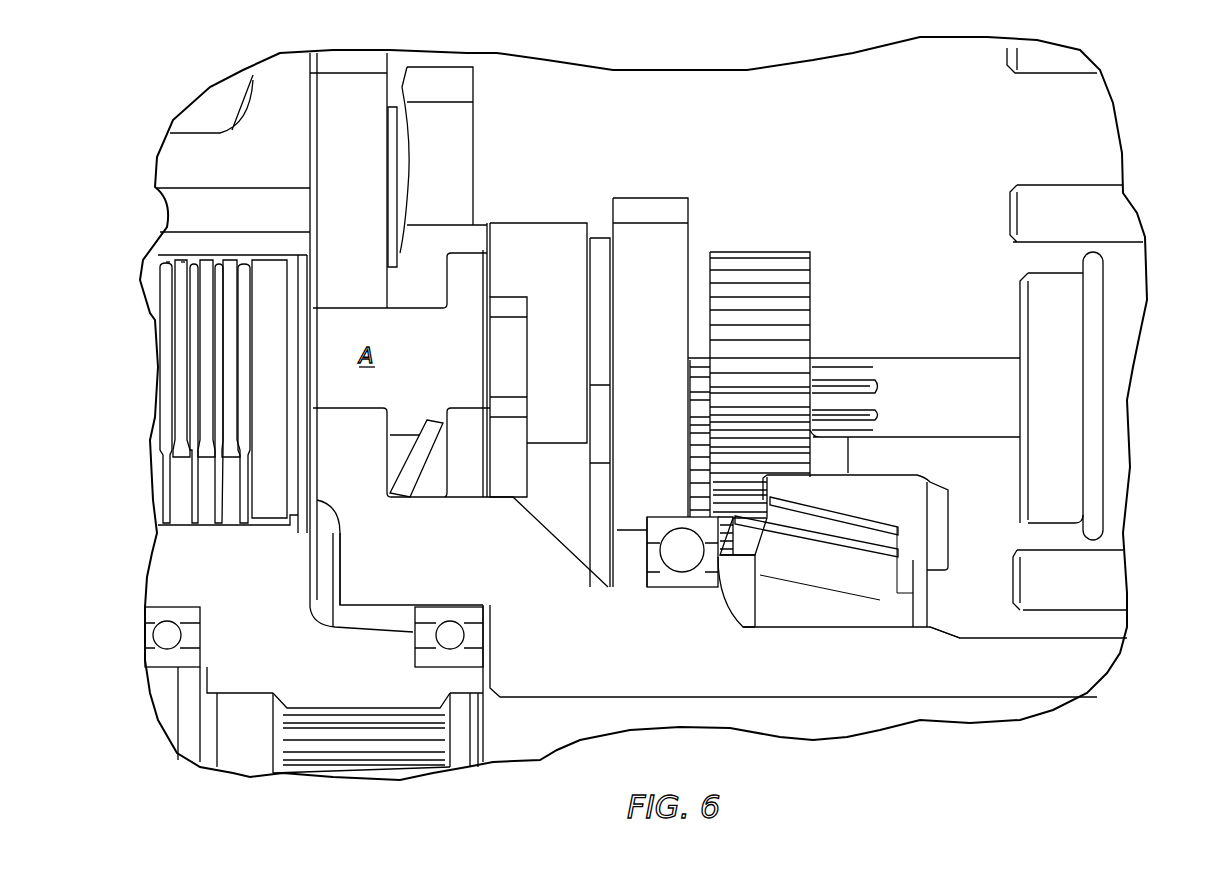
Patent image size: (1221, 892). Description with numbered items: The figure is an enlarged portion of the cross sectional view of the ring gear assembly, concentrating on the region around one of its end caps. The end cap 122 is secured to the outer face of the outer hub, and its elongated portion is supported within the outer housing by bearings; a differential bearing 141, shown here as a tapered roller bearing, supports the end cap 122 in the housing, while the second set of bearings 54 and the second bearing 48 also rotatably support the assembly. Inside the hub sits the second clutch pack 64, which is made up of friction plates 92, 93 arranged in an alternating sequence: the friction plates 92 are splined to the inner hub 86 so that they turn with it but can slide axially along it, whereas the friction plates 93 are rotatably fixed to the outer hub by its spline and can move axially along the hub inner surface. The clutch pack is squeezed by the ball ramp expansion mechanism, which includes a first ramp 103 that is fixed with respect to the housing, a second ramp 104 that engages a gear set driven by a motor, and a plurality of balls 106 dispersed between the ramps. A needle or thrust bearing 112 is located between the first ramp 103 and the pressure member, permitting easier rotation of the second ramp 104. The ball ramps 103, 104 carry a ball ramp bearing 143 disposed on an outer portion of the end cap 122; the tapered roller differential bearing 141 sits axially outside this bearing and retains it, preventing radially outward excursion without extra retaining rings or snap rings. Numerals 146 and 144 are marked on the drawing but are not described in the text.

The end cap 122 is at (343, 102).
The friction plates 93 is at (188, 267).
The friction plates 92 is at (177, 267).
The second clutch pack 64 is at (172, 325).
The second set of bearings 54 is at (140, 660).
The inner hub 86 is at (268, 612).
The second bearing 48 is at (428, 660).
The needle or thrust bearing 112 is at (502, 310).
The first ramp 103 is at (553, 235).
The second ramp 104 is at (650, 237).
The balls 106 is at (630, 320).
The ball ramp bearing 143 is at (657, 590).
The differential bearing 141 is at (737, 603).
The flange 146 is at (623, 573).
The housing wall 144 is at (937, 627).